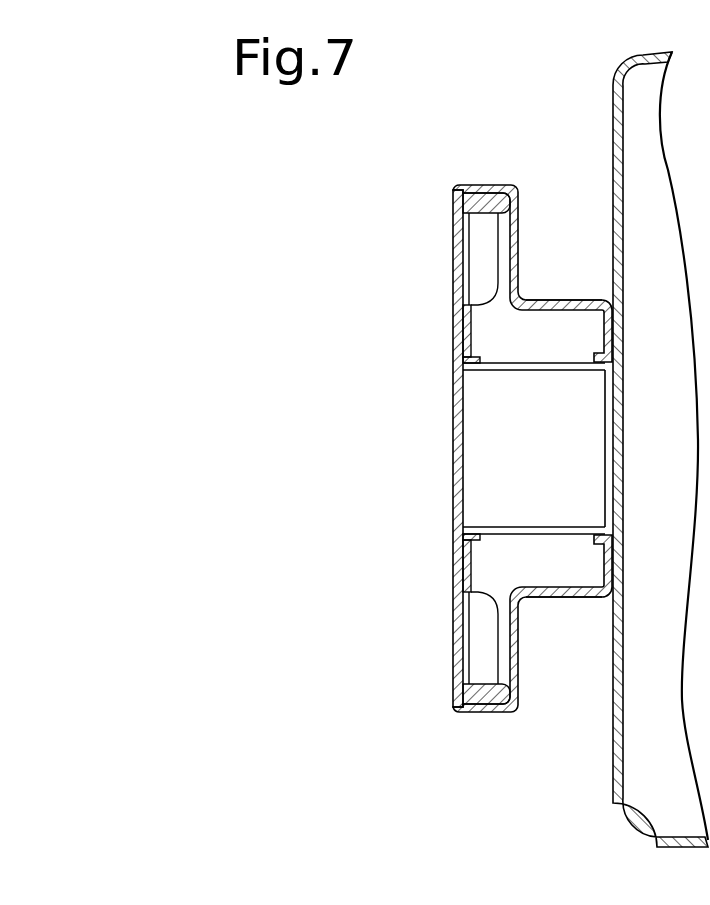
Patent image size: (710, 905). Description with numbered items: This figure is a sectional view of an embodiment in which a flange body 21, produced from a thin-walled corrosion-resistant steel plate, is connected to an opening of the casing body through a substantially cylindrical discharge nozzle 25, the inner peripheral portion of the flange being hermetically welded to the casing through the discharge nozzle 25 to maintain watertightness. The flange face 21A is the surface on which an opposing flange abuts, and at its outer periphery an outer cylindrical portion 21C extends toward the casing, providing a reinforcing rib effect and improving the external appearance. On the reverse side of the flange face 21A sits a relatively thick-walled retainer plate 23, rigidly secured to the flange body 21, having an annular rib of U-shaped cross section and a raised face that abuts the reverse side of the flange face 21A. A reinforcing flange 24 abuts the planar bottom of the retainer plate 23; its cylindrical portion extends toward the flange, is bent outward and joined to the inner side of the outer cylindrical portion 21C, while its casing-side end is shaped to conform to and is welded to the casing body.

The flange body 21 is at (449, 196).
The flange face 21A is at (449, 294).
The outer cylindrical portion 21C is at (485, 182).
The retainer plate 23 is at (454, 335).
The reinforcing flange 24 is at (561, 297).
The discharge nozzle 25 is at (558, 374).